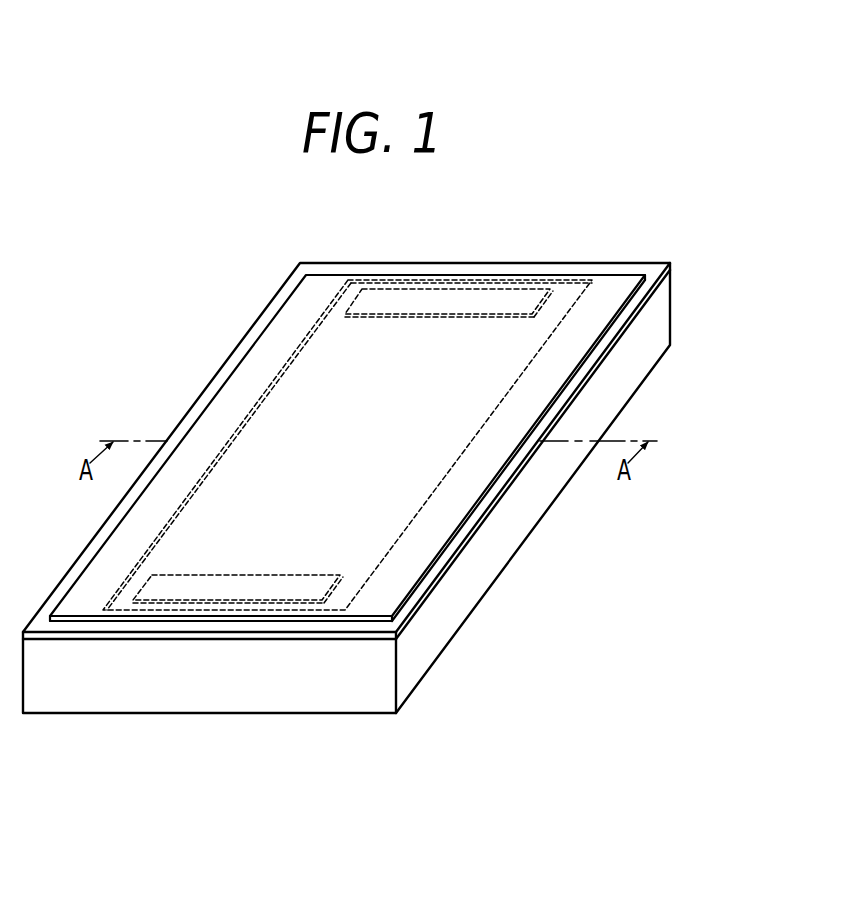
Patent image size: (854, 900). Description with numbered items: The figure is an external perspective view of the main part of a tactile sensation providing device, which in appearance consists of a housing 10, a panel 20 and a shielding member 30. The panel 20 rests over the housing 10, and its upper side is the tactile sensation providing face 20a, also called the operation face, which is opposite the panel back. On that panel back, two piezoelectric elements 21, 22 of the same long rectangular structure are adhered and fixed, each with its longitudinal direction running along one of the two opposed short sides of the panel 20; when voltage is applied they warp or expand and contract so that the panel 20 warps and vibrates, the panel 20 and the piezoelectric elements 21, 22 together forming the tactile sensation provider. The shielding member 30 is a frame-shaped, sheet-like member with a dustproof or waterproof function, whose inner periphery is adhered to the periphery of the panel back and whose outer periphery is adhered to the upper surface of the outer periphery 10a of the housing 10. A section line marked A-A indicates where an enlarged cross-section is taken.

The housing 10 is at (683, 278).
The outer periphery of the housing 10a is at (660, 340).
The panel 20 is at (207, 437).
The tactile sensation providing face 20a is at (247, 380).
The piezoelectric element 21 is at (240, 590).
The piezoelectric element 22 is at (440, 298).
The shielding member 30 is at (535, 383).